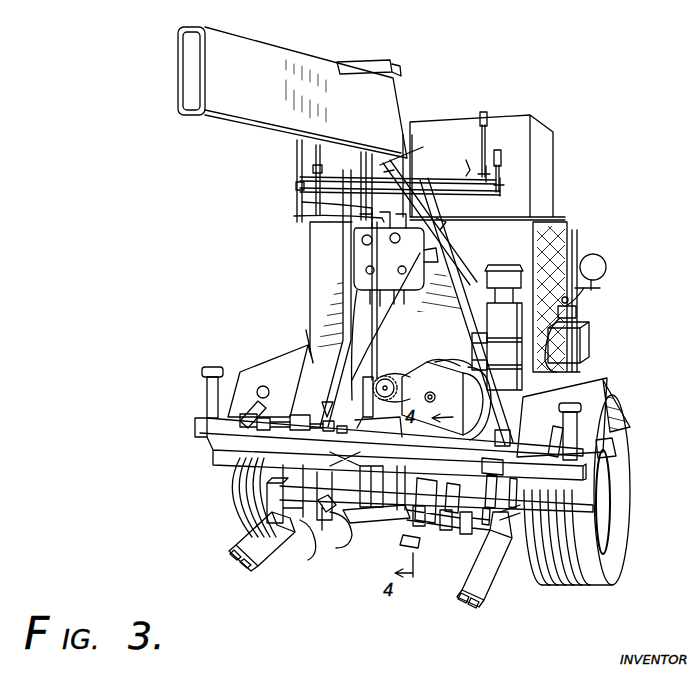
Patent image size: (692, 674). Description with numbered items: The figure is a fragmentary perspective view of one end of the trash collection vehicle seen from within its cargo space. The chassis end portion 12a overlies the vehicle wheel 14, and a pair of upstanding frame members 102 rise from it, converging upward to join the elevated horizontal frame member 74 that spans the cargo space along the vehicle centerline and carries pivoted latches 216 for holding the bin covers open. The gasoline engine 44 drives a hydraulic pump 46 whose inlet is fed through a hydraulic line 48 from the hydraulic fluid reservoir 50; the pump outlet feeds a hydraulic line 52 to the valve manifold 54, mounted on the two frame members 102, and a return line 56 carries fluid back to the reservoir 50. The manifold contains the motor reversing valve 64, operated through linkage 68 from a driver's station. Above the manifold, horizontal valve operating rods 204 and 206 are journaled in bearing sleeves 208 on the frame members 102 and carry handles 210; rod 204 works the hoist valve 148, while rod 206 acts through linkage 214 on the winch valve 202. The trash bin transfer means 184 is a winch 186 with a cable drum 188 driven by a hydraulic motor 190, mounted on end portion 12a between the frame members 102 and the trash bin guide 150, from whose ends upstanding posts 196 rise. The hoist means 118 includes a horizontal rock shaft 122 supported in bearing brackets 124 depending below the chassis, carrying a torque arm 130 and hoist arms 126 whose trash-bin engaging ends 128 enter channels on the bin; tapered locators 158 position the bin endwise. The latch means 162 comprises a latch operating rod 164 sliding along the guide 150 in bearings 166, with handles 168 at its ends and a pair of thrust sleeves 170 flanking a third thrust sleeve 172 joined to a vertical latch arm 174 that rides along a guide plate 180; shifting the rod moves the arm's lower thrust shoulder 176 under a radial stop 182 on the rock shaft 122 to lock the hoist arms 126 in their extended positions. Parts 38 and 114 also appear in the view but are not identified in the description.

The elevated frame member 74 is at (258, 22).
The hydraulic fluid reservoir 50 is at (553, 137).
The handles 210 is at (498, 142).
The valve operating rod 206 is at (469, 168).
The bearing sleeves 208 is at (393, 177).
The pivoted latches 216 is at (496, 173).
The linkage 214 is at (513, 190).
The valve operating rod 204 is at (463, 190).
The winch valve 202 is at (441, 223).
The hoist valve 148 is at (321, 201).
The motor reversing valve 64 is at (327, 215).
The gasoline engine 44 is at (308, 236).
The valve manifold 54 is at (435, 254).
The return line 56 is at (340, 242).
The linkage 68 is at (335, 287).
The upstanding frame members 102 is at (458, 276).
The ball 38 is at (606, 268).
The hydraulic line 52 is at (576, 305).
The hydraulic line 48 is at (578, 318).
The hydraulic pump 46 is at (582, 342).
The cable drum 188 is at (456, 366).
The trash bin transfer means 184 is at (436, 343).
The hydraulic motor 190 is at (408, 370).
The winch 186 is at (381, 378).
The chassis end portion 12a is at (376, 407).
The upstanding posts 196 is at (212, 385).
The third thrust sleeve 172 is at (292, 412).
The handles 168 is at (260, 392).
The thrust sleeves 170 is at (330, 414).
The bearings 166 is at (262, 422).
The latch operating rod 164 is at (303, 424).
The latch means 162 is at (613, 453).
The trash bin guide 150 is at (290, 448).
The bracket 114 is at (372, 486).
The latch arm 174 is at (328, 518).
The locators 158 is at (402, 545).
The thrust shoulder 176 is at (320, 516).
The stop 182 is at (312, 517).
The guide plate 180 is at (252, 480).
The trash bin hoist arms 126 is at (229, 530).
The trash-bin engaging ends 128 is at (230, 550).
The hoist means 118 is at (530, 583).
The bearing brackets 124 is at (513, 489).
The torque arm 130 is at (434, 523).
The rock shaft 122 is at (463, 530).
The vehicle wheel 14 is at (629, 544).